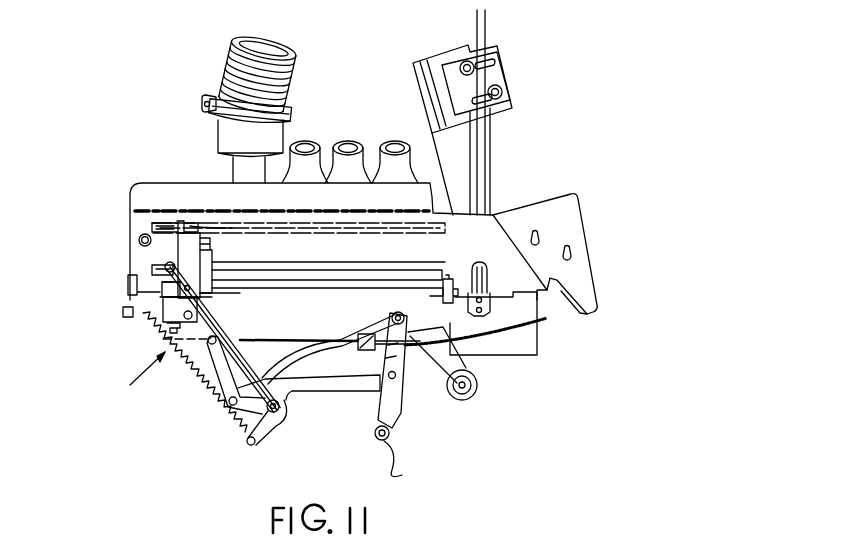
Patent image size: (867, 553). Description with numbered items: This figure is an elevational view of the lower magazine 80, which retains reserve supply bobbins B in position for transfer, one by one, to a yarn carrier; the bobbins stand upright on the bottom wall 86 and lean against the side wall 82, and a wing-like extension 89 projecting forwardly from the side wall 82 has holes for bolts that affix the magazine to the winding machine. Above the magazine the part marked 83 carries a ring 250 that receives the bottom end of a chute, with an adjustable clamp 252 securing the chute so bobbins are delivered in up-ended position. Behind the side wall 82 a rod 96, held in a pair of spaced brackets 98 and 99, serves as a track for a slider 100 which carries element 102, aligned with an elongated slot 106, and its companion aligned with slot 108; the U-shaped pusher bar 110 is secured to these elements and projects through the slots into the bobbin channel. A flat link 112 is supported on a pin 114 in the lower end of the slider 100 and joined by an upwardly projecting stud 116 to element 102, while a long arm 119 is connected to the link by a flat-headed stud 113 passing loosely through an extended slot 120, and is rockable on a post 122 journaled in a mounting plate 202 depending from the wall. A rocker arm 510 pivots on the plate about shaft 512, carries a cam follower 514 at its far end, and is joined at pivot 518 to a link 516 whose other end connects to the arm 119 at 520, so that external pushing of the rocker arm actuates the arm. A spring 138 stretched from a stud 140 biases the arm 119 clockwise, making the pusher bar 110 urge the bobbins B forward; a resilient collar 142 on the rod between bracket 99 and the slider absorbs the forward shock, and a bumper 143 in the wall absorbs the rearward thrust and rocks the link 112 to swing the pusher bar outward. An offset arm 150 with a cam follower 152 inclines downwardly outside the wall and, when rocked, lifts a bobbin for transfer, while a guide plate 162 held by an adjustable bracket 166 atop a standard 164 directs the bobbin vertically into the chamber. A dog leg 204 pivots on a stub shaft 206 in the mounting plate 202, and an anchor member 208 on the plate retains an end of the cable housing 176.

The side wall 82 is at (143, 222).
The element 102 is at (175, 228).
The upwardly projecting stud 116 is at (180, 222).
The elongated slot 106 is at (232, 228).
The bumper 143 is at (138, 238).
The flat link 112 is at (128, 282).
The pusher bar 110 is at (155, 268).
The extended slot 120 is at (162, 284).
The bracket 98 is at (162, 290).
The rod 96 is at (125, 310).
The stud 140 is at (165, 310).
The flat-headed stud 113 is at (170, 325).
The pin 114 is at (172, 338).
The slider 100 is at (205, 273).
The elongated slot 108 is at (362, 258).
The resilient collar 142 is at (445, 282).
The bracket 99 is at (448, 280).
The ring 250 is at (278, 122).
The adjustable clamp 252 is at (207, 100).
The filler tube 83 is at (235, 168).
The bobbins B is at (345, 146).
The standard 164 is at (490, 30).
The guide plate 162 is at (423, 70).
The adjustable bracket 166 is at (506, 80).
The wing-like extension 89 is at (577, 243).
The spring 138 is at (215, 390).
The lower magazine 80 is at (141, 374).
The bottom wall 86 is at (178, 360).
The arm 119 is at (225, 355).
The dog leg 204 is at (235, 405).
The post 122 is at (276, 412).
The stub shaft 206 is at (251, 445).
The mounting plate 202 is at (392, 316).
The connection 520 is at (298, 366).
The anchor member 208 is at (358, 350).
The link 516 is at (340, 385).
The shaft 512 is at (404, 320).
The pivot 518 is at (398, 385).
The rocker arm 510 is at (380, 418).
The cam follower 514 is at (408, 459).
The offset arm 150 is at (440, 380).
The cam follower 152 is at (474, 393).
The cable housing 176 is at (517, 332).